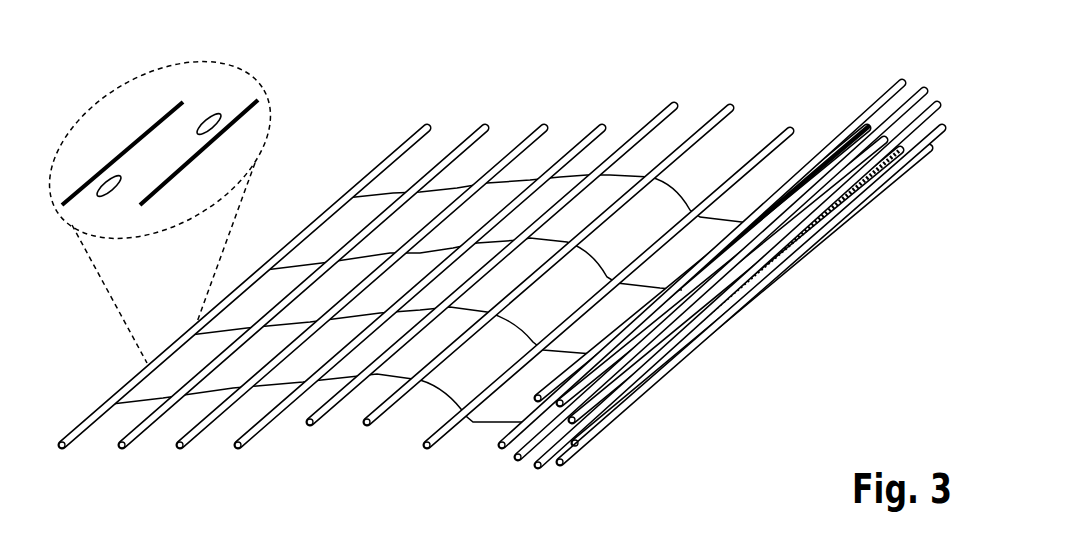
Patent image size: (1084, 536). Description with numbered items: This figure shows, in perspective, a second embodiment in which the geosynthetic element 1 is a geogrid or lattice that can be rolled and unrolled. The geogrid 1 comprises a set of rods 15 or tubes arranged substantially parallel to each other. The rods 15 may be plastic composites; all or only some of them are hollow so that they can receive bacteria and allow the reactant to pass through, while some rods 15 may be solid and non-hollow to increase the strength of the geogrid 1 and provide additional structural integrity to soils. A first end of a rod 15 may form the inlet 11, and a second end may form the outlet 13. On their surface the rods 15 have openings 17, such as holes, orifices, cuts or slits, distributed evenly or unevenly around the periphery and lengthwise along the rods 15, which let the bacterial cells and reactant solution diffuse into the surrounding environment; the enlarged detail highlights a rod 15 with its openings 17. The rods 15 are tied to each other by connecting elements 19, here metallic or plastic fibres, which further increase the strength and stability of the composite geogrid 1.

The geosynthetic element 1 is at (500, 287).
The inlet 11 is at (309, 425).
The outlet 13 is at (607, 127).
The rods 15 is at (207, 149).
The openings 17 is at (224, 120).
The connecting elements 19 is at (393, 177).